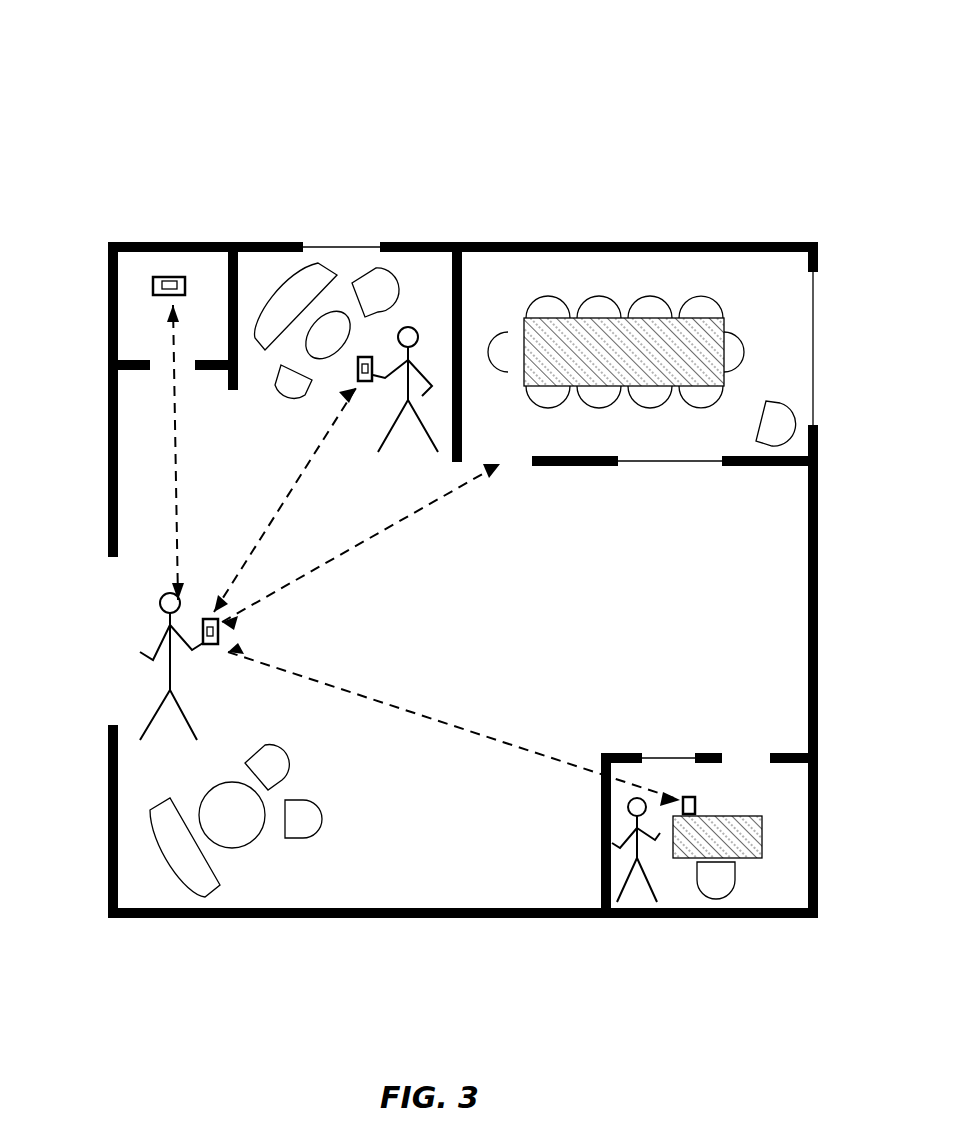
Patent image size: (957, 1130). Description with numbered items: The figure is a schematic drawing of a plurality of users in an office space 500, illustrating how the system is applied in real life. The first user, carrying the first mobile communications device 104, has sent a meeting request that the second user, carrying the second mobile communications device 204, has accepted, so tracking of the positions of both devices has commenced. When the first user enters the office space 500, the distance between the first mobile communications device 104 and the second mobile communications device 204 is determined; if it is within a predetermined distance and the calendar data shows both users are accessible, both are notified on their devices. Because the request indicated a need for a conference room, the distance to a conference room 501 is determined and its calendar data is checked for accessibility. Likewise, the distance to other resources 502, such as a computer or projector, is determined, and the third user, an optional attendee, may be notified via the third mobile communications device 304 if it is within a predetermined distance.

The office space 500 is at (120, 183).
The conference room 501 is at (485, 272).
The resources 502 is at (163, 242).
The second mobile communications device 204 is at (372, 358).
The first mobile communications device 104 is at (218, 632).
The third mobile communications device 304 is at (695, 800).